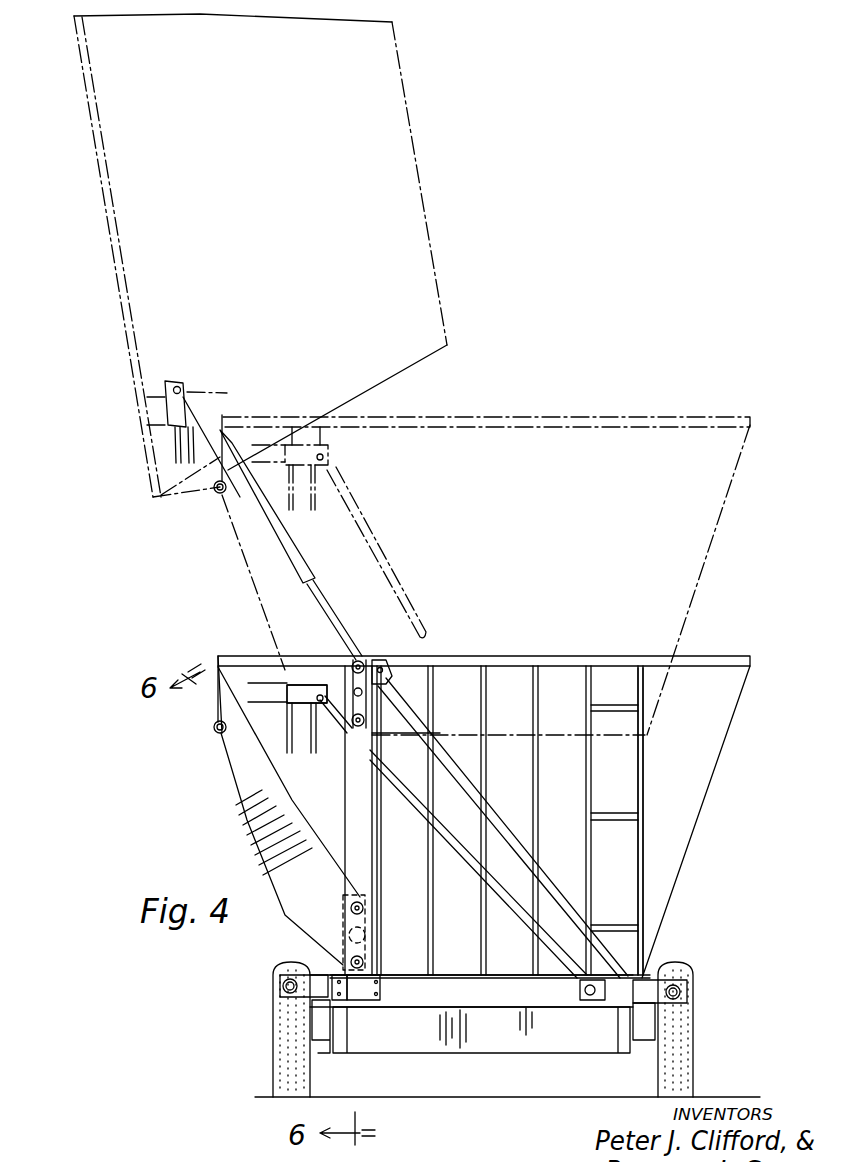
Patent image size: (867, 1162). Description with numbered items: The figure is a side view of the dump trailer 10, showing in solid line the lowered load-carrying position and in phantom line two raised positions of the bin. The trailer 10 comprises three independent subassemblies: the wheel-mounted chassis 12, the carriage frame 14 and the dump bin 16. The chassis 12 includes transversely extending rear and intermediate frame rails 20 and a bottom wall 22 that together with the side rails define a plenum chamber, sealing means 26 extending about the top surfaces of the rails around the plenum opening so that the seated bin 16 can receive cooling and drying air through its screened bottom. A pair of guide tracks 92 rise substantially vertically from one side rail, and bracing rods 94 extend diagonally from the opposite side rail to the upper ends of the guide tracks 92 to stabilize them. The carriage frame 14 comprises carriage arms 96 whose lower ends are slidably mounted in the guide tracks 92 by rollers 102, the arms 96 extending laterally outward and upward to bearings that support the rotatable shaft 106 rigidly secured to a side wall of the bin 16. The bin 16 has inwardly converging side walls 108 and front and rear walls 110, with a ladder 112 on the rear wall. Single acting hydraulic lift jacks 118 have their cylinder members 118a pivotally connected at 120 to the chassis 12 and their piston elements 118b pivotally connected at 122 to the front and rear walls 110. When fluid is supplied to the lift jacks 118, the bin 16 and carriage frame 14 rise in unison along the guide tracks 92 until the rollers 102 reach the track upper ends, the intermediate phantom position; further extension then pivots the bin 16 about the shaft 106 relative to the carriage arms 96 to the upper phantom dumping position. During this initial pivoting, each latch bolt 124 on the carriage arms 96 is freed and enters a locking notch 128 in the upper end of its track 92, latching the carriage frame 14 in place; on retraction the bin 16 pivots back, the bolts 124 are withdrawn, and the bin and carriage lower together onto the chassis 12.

The dump trailer 10 is at (214, 762).
The chassis 12 is at (700, 1036).
The carriage frame 14 is at (233, 800).
The dump bin 16 is at (698, 661).
The rear and intermediate frame rails 20 is at (488, 1000).
The bottom wall 22 is at (535, 1045).
The sealing means 26 is at (437, 978).
The guide tracks 92 is at (355, 790).
The bracing rods 94 is at (463, 778).
The carriage arms 96 is at (235, 537).
The rollers 102 is at (360, 905).
The shaft 106 is at (214, 727).
The side walls 108 is at (690, 847).
The front and rear walls 110 is at (420, 237).
The ladder 112 is at (640, 765).
The hydraulic lift jacks 118 is at (360, 550).
The cylinder members 118a is at (513, 905).
The piston elements 118b is at (320, 707).
The pivotal connection 120 is at (590, 1000).
The pivotal connection 122 is at (177, 387).
The latch bolt 124 is at (345, 928).
The locking notches 128 is at (360, 660).